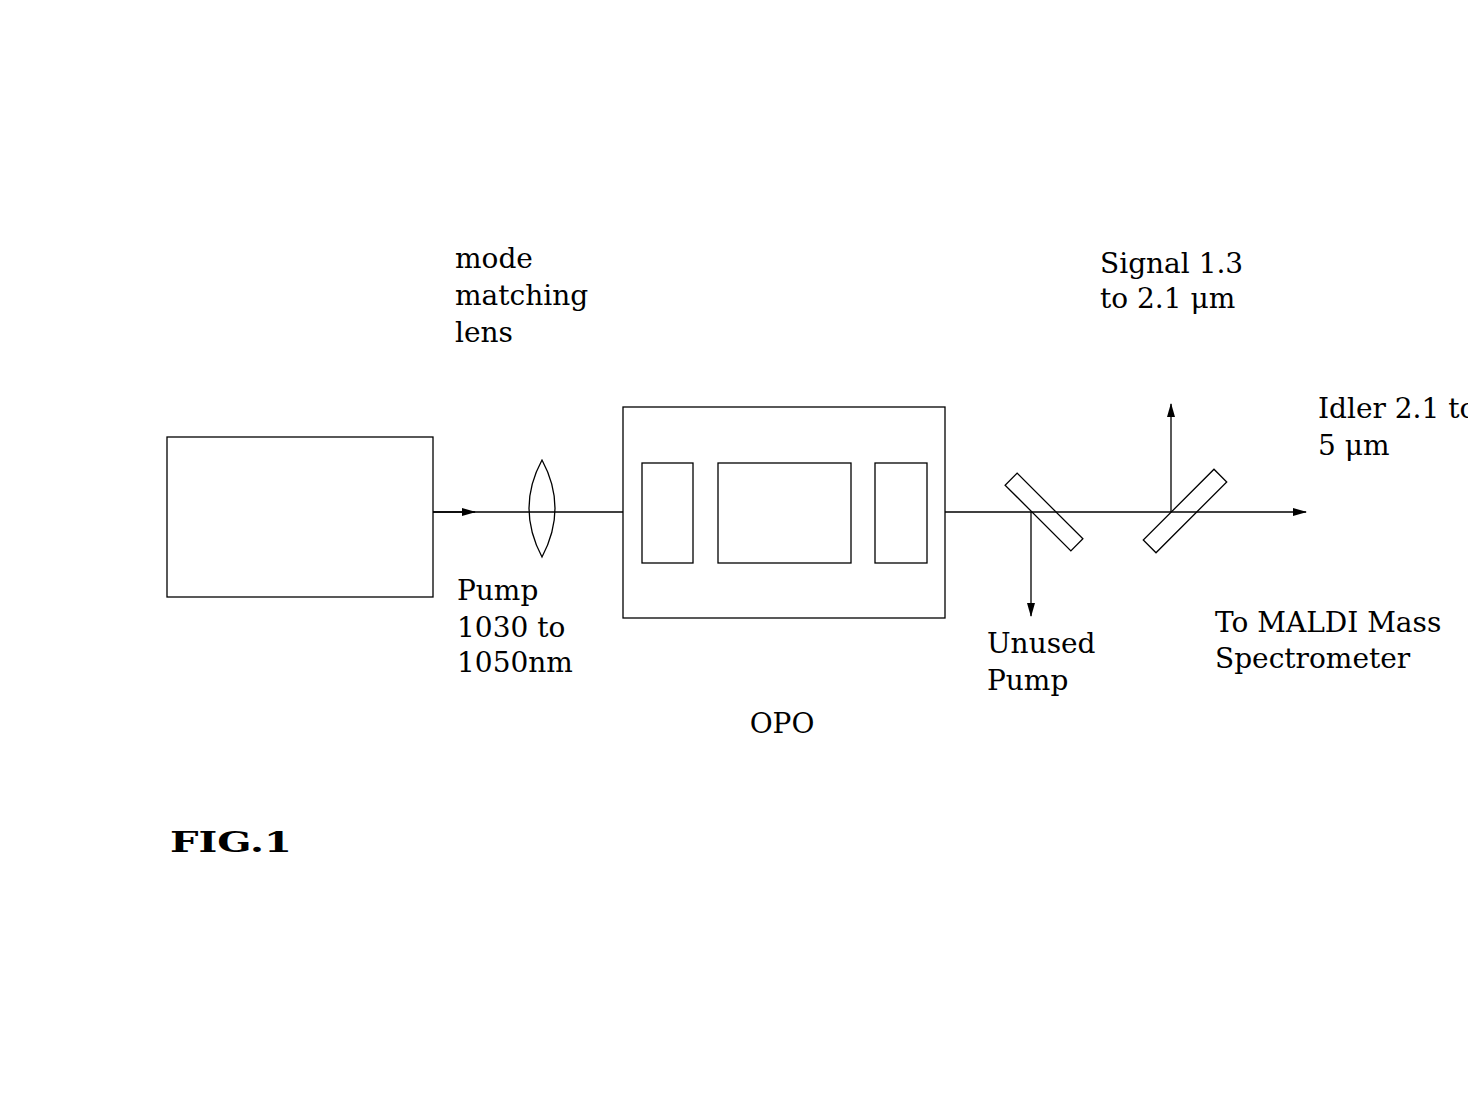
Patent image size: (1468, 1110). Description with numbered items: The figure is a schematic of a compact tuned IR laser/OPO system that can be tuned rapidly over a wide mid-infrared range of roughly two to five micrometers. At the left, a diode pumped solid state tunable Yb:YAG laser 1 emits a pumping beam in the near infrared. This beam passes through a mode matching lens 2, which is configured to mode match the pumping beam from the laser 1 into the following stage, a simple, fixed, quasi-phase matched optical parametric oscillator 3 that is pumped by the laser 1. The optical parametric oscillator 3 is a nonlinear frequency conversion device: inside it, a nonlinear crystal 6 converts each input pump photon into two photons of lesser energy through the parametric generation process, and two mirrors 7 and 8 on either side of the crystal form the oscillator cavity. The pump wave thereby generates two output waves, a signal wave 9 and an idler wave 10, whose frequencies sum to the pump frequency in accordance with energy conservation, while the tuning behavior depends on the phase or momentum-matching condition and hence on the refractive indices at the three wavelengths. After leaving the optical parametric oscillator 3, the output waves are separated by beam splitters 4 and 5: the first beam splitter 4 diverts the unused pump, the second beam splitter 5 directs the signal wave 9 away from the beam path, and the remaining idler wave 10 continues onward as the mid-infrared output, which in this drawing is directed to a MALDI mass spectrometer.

The tunable Yb:YAG laser 1 is at (300, 460).
The mode matching lens 2 is at (533, 457).
The quasi-phase matched optical parametric oscillator 3 is at (784, 460).
The beam splitter 4 is at (1026, 485).
The beam splitter 5 is at (1219, 443).
The nonlinear crystal 6 is at (784, 580).
The mirror 7 is at (659, 575).
The mirror 8 is at (903, 572).
The signal wave 9 is at (1135, 439).
The idler wave 10 is at (1276, 560).